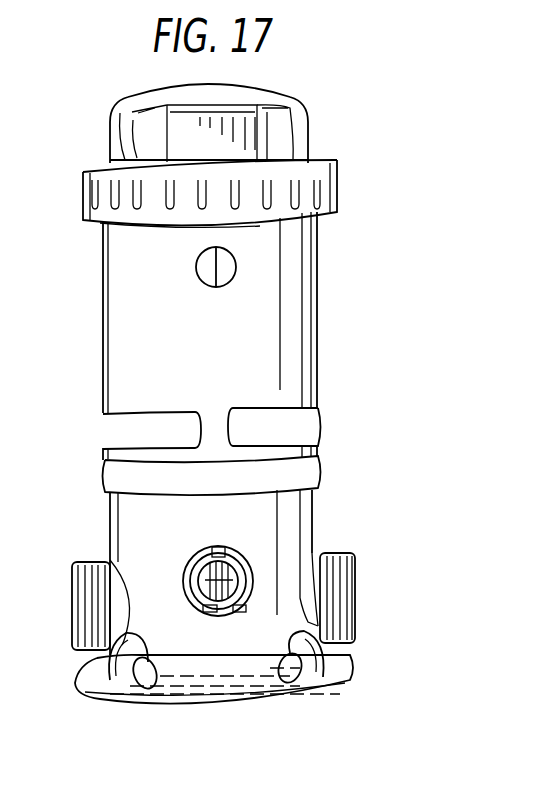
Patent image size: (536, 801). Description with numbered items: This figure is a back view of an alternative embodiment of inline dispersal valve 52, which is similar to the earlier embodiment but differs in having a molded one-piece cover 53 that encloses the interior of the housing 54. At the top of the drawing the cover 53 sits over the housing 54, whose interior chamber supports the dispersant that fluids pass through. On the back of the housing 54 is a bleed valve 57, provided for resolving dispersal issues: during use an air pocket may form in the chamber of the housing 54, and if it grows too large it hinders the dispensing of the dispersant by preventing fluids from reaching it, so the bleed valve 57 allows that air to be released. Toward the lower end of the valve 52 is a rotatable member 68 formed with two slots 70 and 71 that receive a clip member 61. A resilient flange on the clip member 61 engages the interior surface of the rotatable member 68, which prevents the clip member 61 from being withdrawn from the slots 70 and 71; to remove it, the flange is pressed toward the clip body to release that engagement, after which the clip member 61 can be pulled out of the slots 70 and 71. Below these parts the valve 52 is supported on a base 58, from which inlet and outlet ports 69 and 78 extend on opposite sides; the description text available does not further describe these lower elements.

The inline dispersal valve 52 is at (371, 158).
The molded one-piece cover 53 is at (327, 167).
The housing 54 is at (103, 330).
The bleed valve 57 is at (236, 264).
The base 58 is at (208, 680).
The clip member 61 is at (222, 579).
The rotatable member 68 is at (262, 556).
The inlet port 69 is at (183, 580).
The slot 70 is at (240, 603).
The slot 71 is at (217, 546).
The drain lug 78 is at (200, 608).